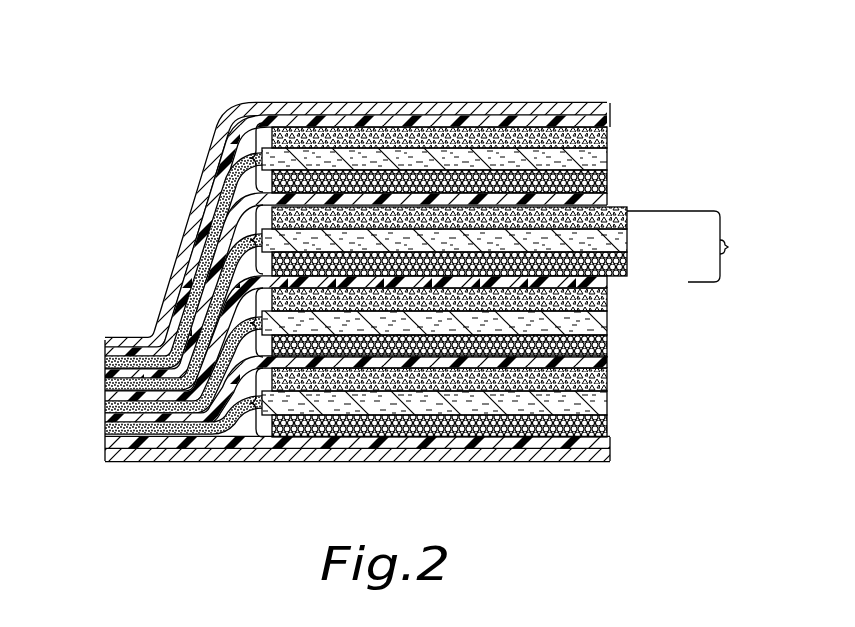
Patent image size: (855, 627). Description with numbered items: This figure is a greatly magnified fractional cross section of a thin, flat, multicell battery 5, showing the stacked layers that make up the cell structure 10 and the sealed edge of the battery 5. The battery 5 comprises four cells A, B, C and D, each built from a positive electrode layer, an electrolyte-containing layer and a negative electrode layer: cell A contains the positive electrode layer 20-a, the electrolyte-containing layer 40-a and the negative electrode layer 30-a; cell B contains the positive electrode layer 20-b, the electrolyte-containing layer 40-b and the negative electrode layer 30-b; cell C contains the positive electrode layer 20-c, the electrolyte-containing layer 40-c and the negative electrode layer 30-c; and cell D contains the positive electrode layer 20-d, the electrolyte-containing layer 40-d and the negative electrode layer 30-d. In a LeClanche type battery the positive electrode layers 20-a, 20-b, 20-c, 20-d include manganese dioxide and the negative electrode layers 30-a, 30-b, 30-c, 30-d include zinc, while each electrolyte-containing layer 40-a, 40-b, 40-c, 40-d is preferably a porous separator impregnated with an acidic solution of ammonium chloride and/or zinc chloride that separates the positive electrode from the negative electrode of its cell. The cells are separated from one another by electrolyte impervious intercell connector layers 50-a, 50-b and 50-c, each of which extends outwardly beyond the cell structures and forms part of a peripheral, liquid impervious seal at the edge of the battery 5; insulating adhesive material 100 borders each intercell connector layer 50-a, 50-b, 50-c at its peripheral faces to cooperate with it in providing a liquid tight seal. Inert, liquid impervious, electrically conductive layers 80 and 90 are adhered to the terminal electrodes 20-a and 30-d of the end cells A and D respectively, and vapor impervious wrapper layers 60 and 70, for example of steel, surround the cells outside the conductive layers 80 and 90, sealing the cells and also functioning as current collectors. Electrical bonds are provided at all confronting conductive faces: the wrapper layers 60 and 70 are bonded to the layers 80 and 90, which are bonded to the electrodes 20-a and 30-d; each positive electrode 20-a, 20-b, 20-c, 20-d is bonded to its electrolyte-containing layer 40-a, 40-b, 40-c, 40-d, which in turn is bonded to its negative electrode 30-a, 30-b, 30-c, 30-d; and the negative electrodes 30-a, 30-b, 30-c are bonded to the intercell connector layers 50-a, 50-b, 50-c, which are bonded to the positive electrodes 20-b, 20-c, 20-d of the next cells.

The multicell battery 5 is at (359, 92).
The cell stack 10 is at (696, 246).
The positive electrode layer 20-a is at (607, 138).
The positive electrode layer 20-b is at (627, 223).
The positive electrode layer 20-c is at (610, 306).
The positive electrode layer 20-d is at (607, 385).
The negative electrode layer 30-a is at (607, 186).
The negative electrode layer 30-b is at (627, 266).
The negative electrode layer 30-c is at (607, 348).
The negative electrode layer 30-d is at (607, 427).
The electrolyte-containing layer 40-a is at (607, 163).
The electrolyte-containing layer 40-b is at (627, 243).
The electrolyte-containing layer 40-c is at (607, 323).
The electrolyte-containing layer 40-d is at (607, 403).
The intercell connector layer 50-a is at (603, 207).
The intercell connector layer 50-b is at (610, 284).
The intercell connector layer 50-c is at (607, 363).
The wrapper layer 60 is at (611, 116).
The wrapper layer 70 is at (607, 461).
The electrically conductive layer 80 is at (612, 124).
The electrically conductive layer 90 is at (612, 446).
The insulating adhesive material 100 is at (105, 382).
The cell A is at (251, 160).
The cell B is at (252, 243).
The cell C is at (252, 322).
The cell D is at (252, 404).